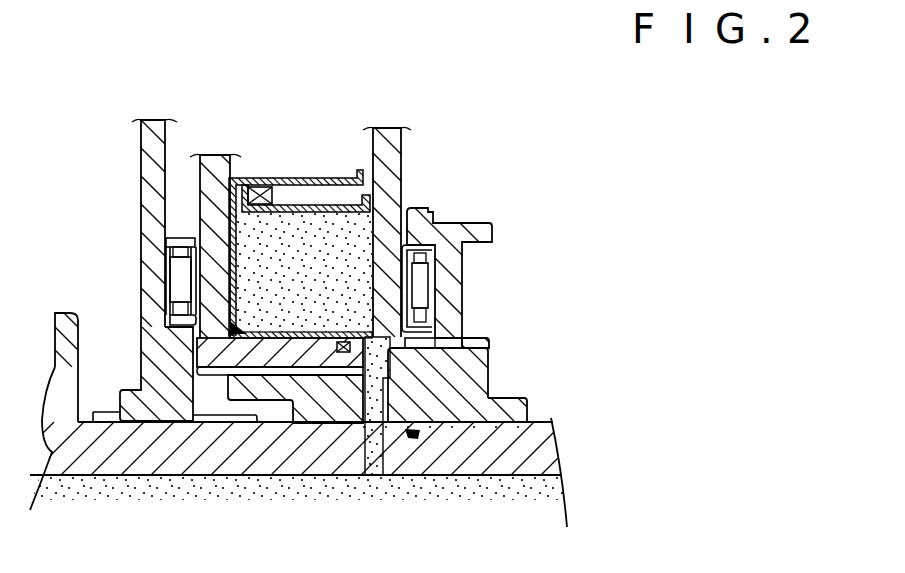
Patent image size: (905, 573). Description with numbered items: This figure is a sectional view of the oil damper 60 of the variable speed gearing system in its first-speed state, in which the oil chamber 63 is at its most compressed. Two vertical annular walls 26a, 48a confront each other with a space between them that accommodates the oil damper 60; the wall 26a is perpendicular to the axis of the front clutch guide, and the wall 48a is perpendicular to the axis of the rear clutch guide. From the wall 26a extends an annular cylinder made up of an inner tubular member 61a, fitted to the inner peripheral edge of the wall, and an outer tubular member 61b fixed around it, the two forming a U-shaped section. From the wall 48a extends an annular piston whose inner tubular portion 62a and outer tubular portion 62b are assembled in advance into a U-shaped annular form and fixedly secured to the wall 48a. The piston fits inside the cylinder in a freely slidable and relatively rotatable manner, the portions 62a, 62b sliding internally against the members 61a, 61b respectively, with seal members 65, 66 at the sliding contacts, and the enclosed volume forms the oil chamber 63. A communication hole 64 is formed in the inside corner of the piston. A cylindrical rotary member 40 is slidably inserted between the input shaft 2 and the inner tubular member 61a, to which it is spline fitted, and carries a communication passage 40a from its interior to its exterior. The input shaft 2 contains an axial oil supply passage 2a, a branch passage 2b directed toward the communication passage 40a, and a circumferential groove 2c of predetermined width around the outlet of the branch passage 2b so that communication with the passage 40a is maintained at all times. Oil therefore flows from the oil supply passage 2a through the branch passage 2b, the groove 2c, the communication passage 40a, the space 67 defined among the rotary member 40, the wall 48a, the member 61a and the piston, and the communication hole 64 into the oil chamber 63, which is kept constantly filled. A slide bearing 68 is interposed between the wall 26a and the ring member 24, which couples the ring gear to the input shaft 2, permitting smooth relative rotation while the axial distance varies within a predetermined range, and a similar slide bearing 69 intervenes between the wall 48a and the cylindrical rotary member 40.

The ring member 24 is at (141, 138).
The vertical annular wall 26a is at (217, 157).
The oil damper 60 is at (297, 118).
The inner tubular member 61a is at (141, 327).
The outer tubular member 61b is at (327, 178).
The inner tubular portion 62a is at (297, 332).
The outer tubular portion 62b is at (312, 213).
The oil chamber 63 is at (267, 253).
The communication hole 64 is at (440, 340).
The seal member 65 is at (343, 345).
The seal member 66 is at (257, 183).
The space 67 is at (390, 363).
The slide bearing 68 is at (178, 273).
The slide bearing 69 is at (420, 282).
The vertical annular wall 48a is at (403, 140).
The cylindrical rotary member 40 is at (330, 413).
The communication passage 40a is at (390, 391).
The input shaft 2 is at (547, 458).
The oil supply passage 2a is at (552, 504).
The branch passage 2b is at (372, 476).
The groove 2c is at (410, 432).